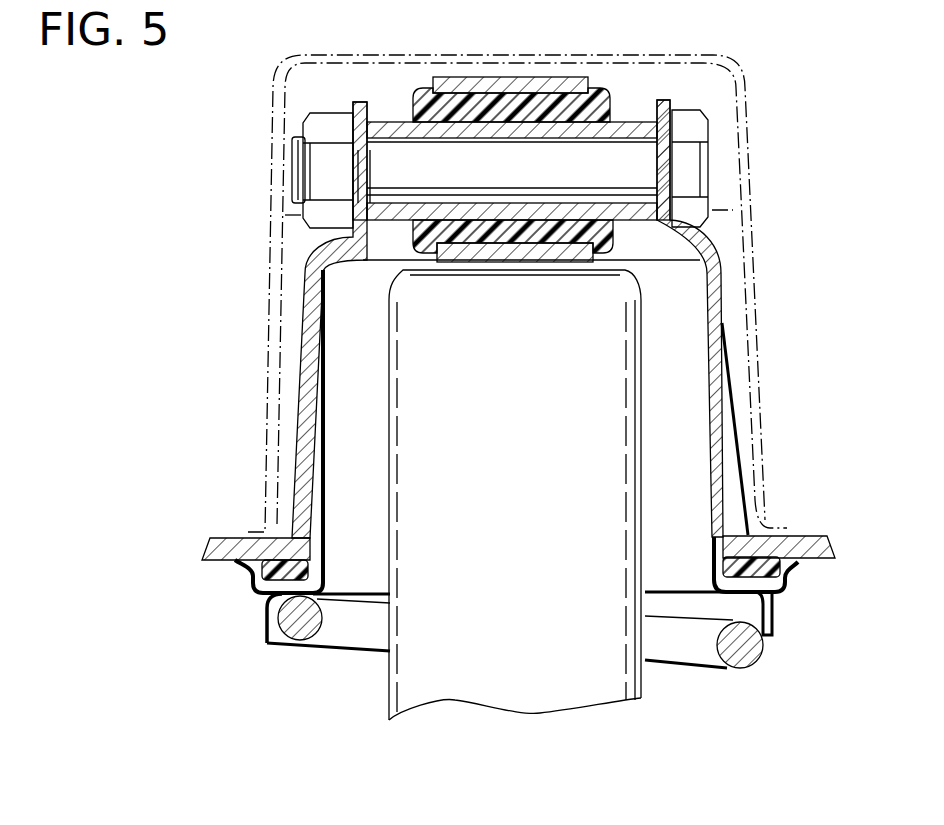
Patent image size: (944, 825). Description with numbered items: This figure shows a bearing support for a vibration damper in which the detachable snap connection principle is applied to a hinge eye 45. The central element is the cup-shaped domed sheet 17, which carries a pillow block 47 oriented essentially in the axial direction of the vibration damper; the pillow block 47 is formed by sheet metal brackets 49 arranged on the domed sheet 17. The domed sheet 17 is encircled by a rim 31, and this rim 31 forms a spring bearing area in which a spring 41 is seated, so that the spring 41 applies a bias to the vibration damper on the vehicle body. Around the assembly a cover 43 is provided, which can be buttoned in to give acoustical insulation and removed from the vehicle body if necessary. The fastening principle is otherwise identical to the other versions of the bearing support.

The domed sheet 17 is at (720, 270).
The rim 31 is at (782, 595).
The spring 41 is at (297, 628).
The cover 43 is at (760, 425).
The hinge eye 45 is at (800, 119).
The pillow block 47 is at (385, 112).
The sheet metal bracket 49 is at (353, 233).